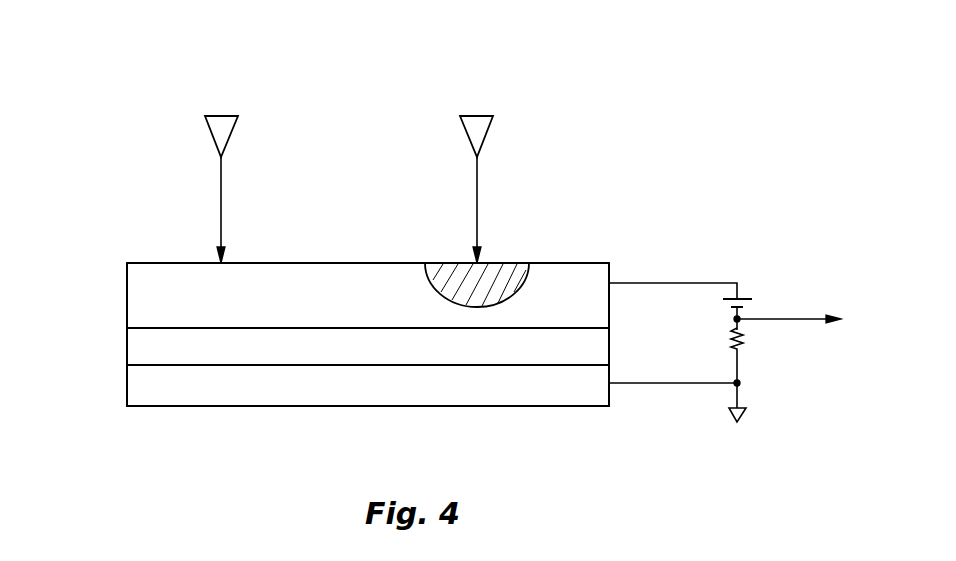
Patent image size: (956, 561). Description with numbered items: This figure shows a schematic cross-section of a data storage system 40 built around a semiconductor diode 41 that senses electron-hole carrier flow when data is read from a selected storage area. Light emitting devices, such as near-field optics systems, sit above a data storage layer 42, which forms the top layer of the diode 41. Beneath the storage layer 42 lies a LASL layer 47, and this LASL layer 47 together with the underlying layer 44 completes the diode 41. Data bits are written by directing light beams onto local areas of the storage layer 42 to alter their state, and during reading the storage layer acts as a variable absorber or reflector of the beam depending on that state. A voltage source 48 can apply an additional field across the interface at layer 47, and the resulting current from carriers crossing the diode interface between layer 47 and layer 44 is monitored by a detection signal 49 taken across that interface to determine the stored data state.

The data storage system 40 is at (98, 209).
The semiconductor diode 41 is at (117, 327).
The data storage layer 42 is at (127, 289).
The layer 44 is at (540, 406).
The LASL layer 47 is at (609, 354).
The voltage source 48 is at (743, 297).
The detection signal 49 is at (804, 321).